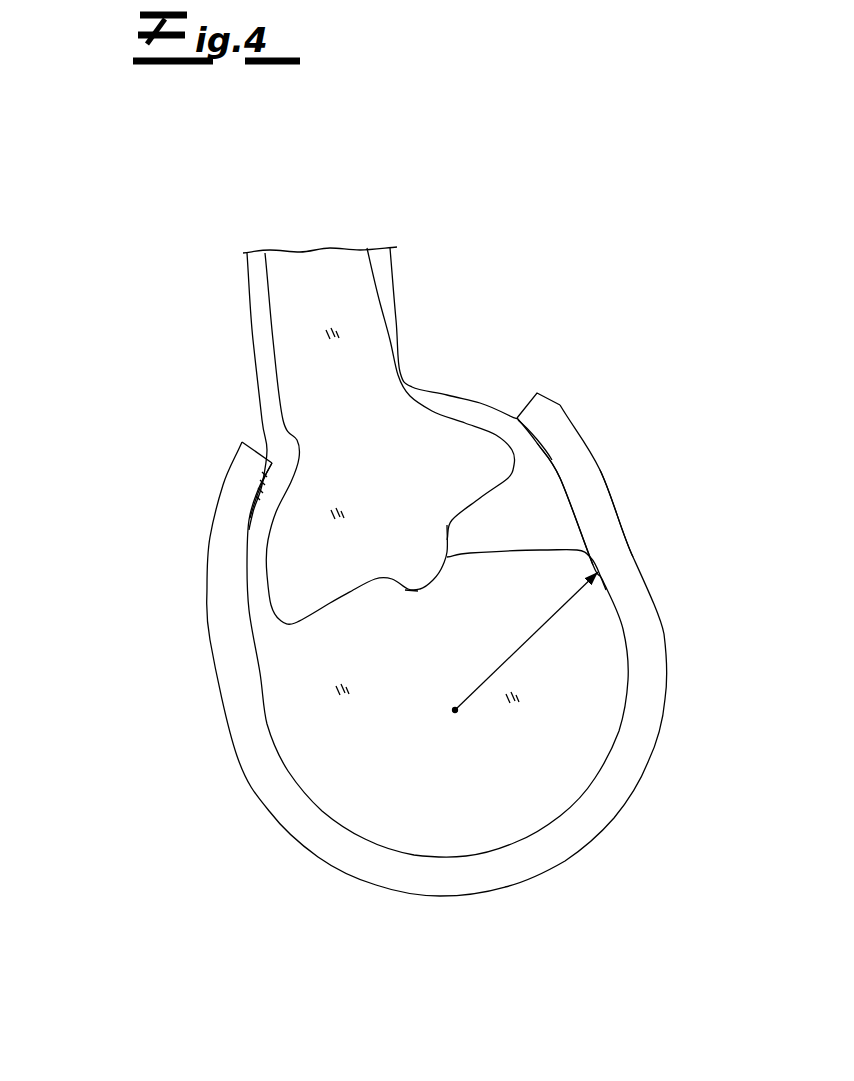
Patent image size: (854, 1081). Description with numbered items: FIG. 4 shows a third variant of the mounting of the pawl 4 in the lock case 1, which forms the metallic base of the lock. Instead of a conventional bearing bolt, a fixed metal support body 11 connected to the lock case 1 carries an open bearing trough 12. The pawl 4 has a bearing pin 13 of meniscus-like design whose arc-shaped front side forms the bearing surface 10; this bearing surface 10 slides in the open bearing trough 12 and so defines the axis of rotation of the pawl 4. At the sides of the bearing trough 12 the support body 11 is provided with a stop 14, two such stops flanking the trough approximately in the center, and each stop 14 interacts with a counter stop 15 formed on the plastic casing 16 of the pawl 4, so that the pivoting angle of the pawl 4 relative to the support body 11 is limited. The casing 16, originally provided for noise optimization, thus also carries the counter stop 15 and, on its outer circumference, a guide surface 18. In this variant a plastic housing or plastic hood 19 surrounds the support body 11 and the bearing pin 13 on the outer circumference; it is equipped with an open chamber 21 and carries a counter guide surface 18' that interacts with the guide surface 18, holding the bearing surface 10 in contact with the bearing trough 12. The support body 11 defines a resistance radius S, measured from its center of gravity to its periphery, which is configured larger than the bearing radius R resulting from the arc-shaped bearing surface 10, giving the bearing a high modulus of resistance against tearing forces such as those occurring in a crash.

The lock case 1 is at (587, 911).
The pawl 4 is at (349, 247).
The bearing surface 10 is at (285, 574).
The support body 11 is at (413, 817).
The bearing trough 12 is at (417, 585).
The bearing pin 13 is at (377, 493).
The stop 14 is at (543, 545).
The counter stop 15 is at (500, 485).
The casing 16 is at (250, 278).
The guide surface 18 is at (388, 409).
The counter guide surface 18' is at (404, 440).
The plastic housing 19 is at (644, 598).
The chamber 21 is at (563, 498).
The bearing radius R is at (433, 582).
The resistance radius S is at (530, 640).